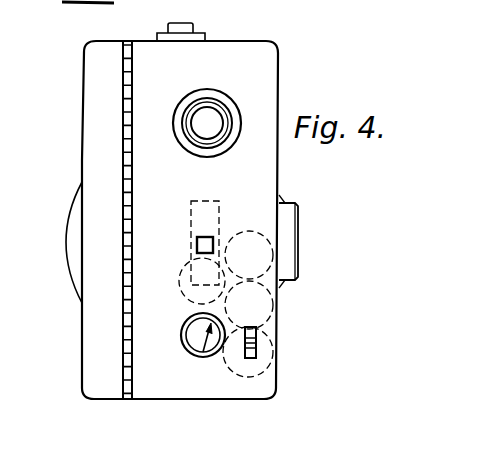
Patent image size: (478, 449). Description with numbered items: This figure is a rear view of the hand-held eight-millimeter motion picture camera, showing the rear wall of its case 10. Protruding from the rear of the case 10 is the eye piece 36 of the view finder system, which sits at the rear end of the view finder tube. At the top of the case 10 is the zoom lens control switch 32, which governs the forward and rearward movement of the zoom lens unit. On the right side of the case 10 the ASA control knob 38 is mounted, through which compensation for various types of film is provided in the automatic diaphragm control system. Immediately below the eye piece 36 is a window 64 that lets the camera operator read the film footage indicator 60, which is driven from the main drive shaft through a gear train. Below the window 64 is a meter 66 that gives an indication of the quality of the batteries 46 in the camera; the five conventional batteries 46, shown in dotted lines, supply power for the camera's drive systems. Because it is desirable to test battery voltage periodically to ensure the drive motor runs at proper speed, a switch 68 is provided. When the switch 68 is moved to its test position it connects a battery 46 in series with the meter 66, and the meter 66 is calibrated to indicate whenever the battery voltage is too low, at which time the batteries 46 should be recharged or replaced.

The case 10 is at (82, 338).
The zoom lens control switch 32 is at (180, 25).
The eye piece 36 is at (222, 103).
The ASA control knob 38 is at (298, 205).
The batteries 46 is at (253, 229).
The film footage indicator 60 is at (197, 200).
The window 64 is at (197, 247).
The meter 66 is at (195, 345).
The switch 68 is at (256, 352).